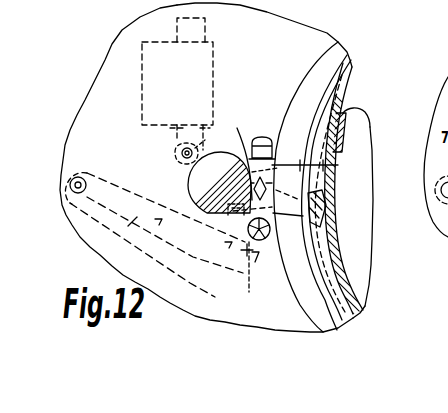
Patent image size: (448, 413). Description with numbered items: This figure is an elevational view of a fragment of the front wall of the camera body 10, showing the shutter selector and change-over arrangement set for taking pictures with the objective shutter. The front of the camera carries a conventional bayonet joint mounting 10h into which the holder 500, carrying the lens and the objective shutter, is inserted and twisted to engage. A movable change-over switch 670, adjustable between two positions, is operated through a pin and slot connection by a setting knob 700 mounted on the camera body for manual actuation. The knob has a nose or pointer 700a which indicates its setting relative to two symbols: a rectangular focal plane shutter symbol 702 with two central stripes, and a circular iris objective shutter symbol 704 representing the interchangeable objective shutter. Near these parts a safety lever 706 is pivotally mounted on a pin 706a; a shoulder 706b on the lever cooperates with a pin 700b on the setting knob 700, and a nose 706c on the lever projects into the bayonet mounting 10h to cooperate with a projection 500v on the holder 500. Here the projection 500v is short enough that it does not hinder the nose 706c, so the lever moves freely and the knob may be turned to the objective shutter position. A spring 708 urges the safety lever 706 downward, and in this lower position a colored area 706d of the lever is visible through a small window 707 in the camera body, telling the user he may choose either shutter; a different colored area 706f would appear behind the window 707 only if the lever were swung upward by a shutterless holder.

The camera body 10 is at (343, 45).
The bayonet joint mounting 10h is at (352, 318).
The holder 500 is at (343, 113).
The projection 500v is at (303, 215).
The change-over switch 670 is at (216, 28).
The setting knob 700 is at (185, 190).
The nose or pointer 700a is at (285, 187).
The pin 700b is at (193, 233).
The focal plane shutter symbol 702 is at (260, 136).
The objective shutter symbol 704 is at (270, 245).
The safety lever 706 is at (132, 189).
The pin 706a is at (84, 163).
The shoulder 706b is at (228, 255).
The nose 706c is at (325, 196).
The colored area 706d is at (318, 166).
The different colored area 706f is at (250, 290).
The window 707 is at (236, 157).
The spring 708 is at (138, 222).